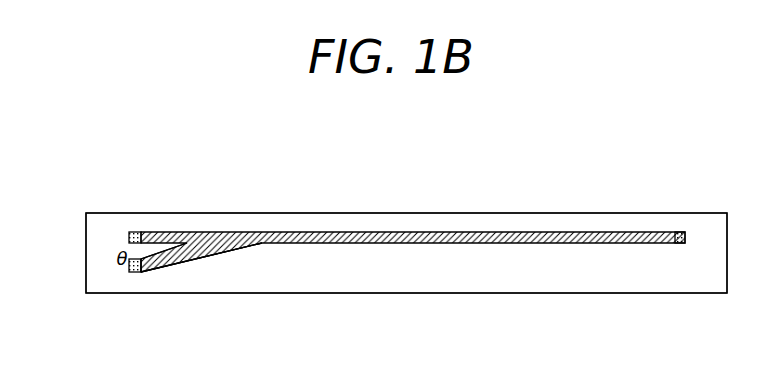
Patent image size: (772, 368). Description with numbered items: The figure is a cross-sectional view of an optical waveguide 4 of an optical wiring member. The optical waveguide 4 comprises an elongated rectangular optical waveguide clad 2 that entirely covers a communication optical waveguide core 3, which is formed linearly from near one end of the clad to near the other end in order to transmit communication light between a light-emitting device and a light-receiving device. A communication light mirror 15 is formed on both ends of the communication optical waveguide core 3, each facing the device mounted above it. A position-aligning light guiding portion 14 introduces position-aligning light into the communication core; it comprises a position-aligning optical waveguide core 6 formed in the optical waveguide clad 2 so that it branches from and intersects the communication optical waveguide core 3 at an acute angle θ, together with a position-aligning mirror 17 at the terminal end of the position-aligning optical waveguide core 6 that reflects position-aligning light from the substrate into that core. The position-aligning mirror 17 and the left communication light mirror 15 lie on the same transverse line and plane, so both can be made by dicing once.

The optical waveguide 4 is at (77, 193).
The optical waveguide clad 2 is at (238, 213).
The communication optical waveguide core 3 is at (349, 232).
The position-aligning optical waveguide core 6 is at (167, 267).
The position-aligning light guiding portion 14 is at (208, 258).
The communication light mirror 15 is at (135, 232).
The position-aligning mirror 17 is at (136, 273).